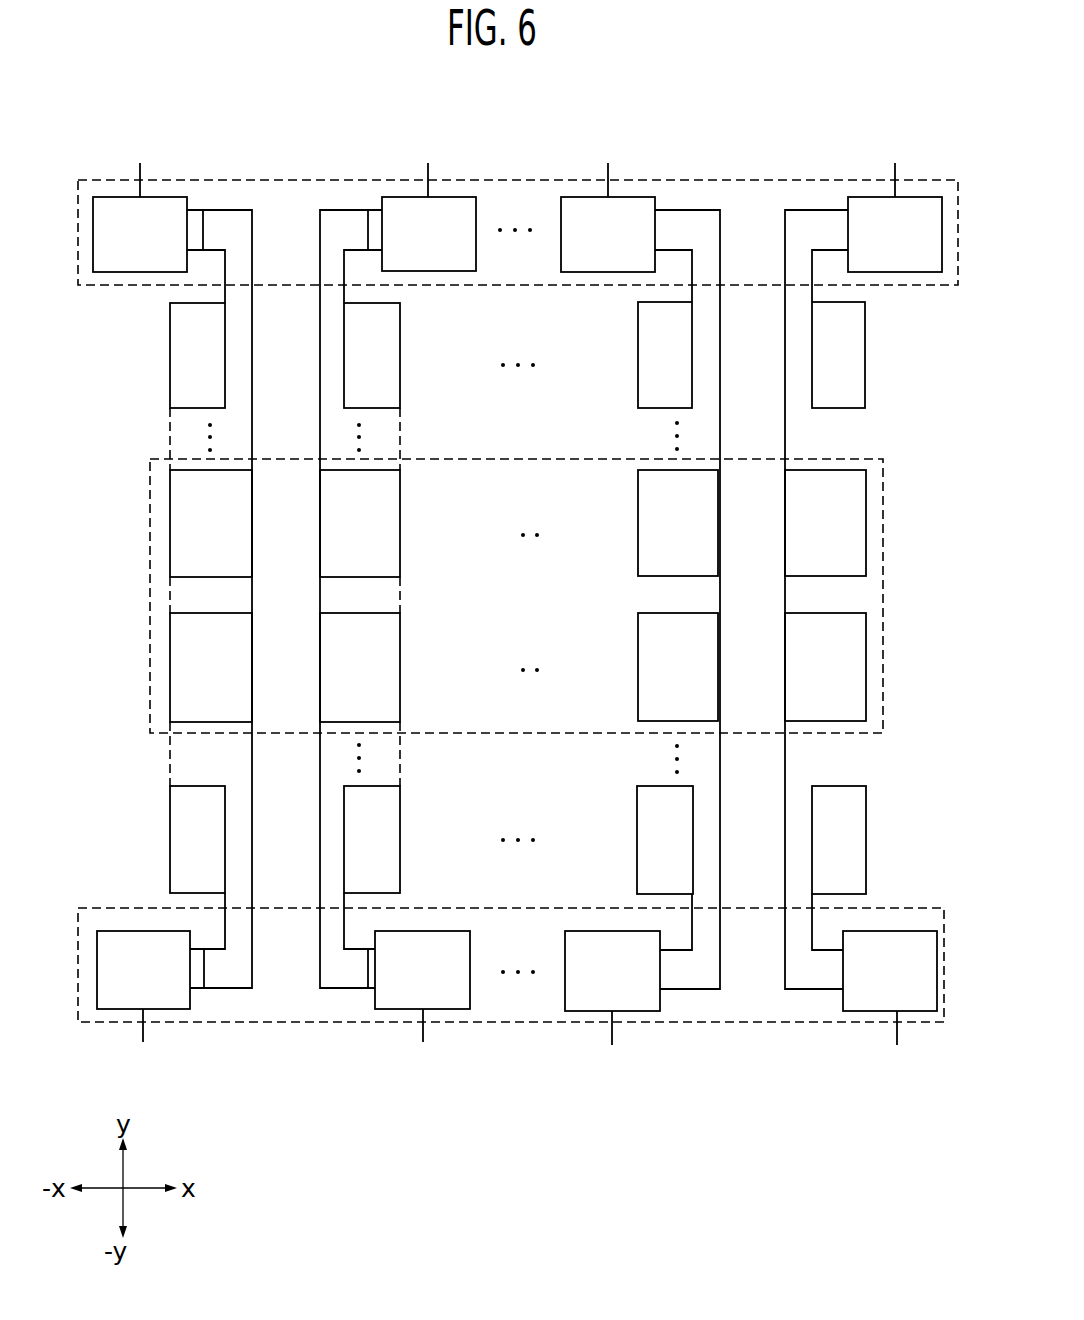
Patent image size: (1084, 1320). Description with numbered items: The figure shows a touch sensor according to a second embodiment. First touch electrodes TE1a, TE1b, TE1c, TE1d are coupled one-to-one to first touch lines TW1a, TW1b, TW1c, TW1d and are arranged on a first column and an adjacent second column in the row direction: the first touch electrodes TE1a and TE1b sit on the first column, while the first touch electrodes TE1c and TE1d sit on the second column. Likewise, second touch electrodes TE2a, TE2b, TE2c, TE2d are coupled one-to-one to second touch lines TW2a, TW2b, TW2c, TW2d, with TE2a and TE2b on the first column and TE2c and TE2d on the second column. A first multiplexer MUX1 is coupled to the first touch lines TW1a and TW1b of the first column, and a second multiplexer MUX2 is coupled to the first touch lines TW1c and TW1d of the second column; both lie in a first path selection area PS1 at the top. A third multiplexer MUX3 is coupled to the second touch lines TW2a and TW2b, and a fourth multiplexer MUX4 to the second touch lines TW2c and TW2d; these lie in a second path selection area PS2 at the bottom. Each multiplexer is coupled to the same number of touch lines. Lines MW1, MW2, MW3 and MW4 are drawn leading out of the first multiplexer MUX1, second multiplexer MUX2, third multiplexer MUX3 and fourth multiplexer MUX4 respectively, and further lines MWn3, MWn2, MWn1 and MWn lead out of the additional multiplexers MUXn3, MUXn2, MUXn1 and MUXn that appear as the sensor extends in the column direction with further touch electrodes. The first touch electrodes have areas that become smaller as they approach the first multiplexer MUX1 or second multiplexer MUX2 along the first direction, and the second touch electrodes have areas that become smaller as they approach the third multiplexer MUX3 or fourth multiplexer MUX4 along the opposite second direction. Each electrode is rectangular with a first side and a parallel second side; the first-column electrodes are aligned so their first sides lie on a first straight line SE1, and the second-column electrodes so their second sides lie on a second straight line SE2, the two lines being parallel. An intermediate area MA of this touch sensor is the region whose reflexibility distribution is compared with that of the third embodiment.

The first multiplexer wiring MW1' MW1 is at (143, 166).
The second multiplexer wiring MW2' MW2 is at (429, 166).
The third multiplexer wiring MW3' MW3 is at (144, 1041).
The fourth multiplexer wiring MW4' MW4 is at (425, 1041).
The (n-3)th multiplexer wiring MW(n-3)' MWn3 is at (609, 162).
The (n-2)th multiplexer wiring MW(n-2)' MWn2 is at (897, 162).
The (n-1)th multiplexer wiring MW(n-1)' MWn1 is at (610, 1042).
The nth multiplexer wiring MWn' MWn is at (903, 1042).
The first touch line TW1a is at (203, 250).
The first touch line TW1b is at (233, 210).
The first touch line TW1c is at (368, 250).
The first touch line TW1d is at (335, 210).
The second touch line TW2a is at (204, 988).
The second touch line TW2b is at (233, 988).
The second touch line TW2c is at (368, 988).
The second touch line TW2d is at (337, 988).
The first multiplexer MUX1 is at (114, 246).
The second multiplexer MUX2 is at (404, 246).
The third multiplexer MUX3 is at (119, 981).
The fourth multiplexer MUX4 is at (398, 981).
The multiplexer MUX(n−3)' MUXn3 is at (587, 224).
The multiplexer MUX(n−2)' MUXn2 is at (877, 224).
The multiplexer MUX(n−1)' MUXn1 is at (592, 960).
The multiplexer MUXn' MUXn is at (866, 981).
The first touch electrode TE1a is at (177, 365).
The first touch electrode TE1b is at (190, 530).
The first touch electrode TE1c is at (351, 365).
The first touch electrode TE1d is at (339, 530).
The second touch electrode TE2a is at (177, 848).
The second touch electrode TE2b is at (190, 673).
The second touch electrode TE2c is at (351, 848).
The second touch electrode TE2d is at (339, 673).
The first straight line SE1 is at (170, 604).
The second straight line SE2 is at (400, 604).
The intermediate area MA is at (150, 665).
The first path selection area PS1 is at (740, 180).
The second path selection area PS2 is at (517, 1022).